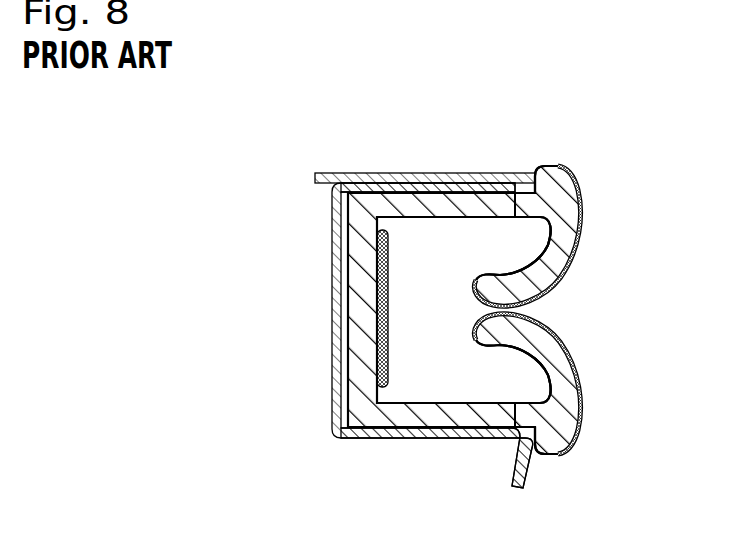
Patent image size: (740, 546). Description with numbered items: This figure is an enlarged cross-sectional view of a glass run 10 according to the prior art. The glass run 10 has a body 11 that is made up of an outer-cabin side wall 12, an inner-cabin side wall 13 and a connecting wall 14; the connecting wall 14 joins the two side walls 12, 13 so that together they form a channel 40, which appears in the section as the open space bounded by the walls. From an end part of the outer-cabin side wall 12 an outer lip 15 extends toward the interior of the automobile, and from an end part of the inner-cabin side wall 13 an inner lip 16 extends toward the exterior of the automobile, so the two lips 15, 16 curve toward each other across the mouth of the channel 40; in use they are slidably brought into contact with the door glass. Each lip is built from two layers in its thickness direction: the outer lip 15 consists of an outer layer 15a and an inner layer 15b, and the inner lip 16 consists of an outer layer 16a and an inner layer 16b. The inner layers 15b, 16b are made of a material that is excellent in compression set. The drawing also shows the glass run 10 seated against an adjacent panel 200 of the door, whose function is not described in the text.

The panel 200 is at (438, 177).
The glass run 10 is at (480, 309).
The body 11 is at (396, 309).
The outer-cabin side wall 12 is at (462, 186).
The inner-cabin side wall 13 is at (445, 420).
The connecting wall 14 is at (358, 303).
The outer lip 15 is at (566, 236).
The outer layer of outer lip 15a is at (582, 212).
The inner layer of outer lip 15b is at (547, 245).
The inner lip 16 is at (563, 384).
The outer layer of inner lip 16a is at (578, 405).
The inner layer of inner lip 16b is at (547, 373).
The channel 40 is at (448, 325).